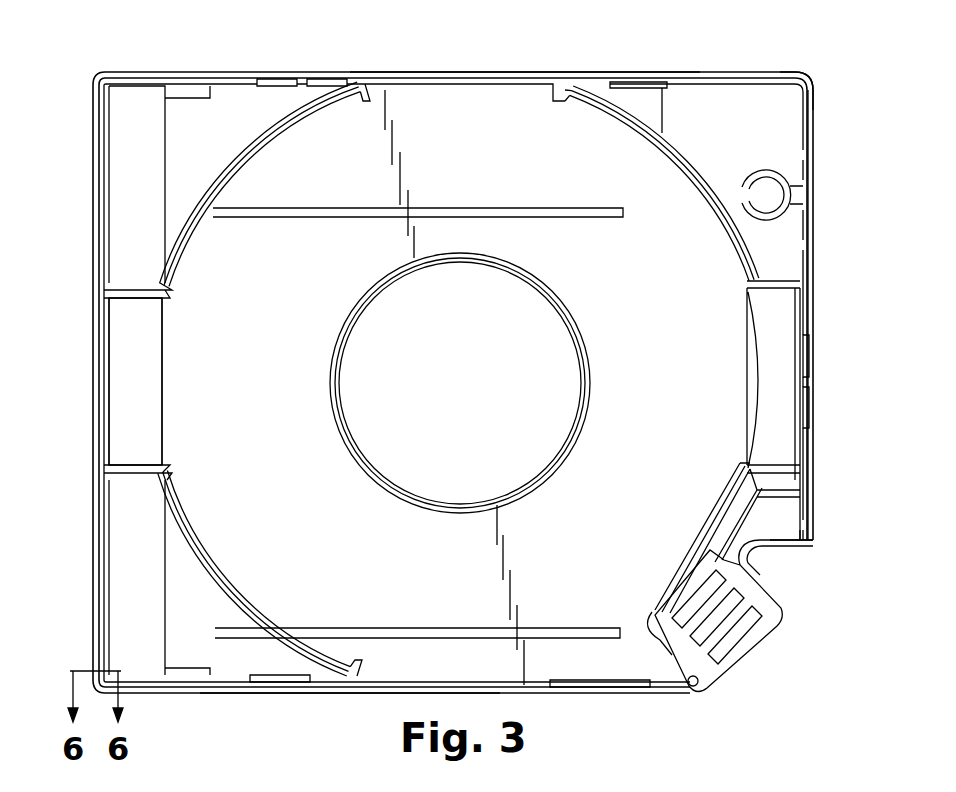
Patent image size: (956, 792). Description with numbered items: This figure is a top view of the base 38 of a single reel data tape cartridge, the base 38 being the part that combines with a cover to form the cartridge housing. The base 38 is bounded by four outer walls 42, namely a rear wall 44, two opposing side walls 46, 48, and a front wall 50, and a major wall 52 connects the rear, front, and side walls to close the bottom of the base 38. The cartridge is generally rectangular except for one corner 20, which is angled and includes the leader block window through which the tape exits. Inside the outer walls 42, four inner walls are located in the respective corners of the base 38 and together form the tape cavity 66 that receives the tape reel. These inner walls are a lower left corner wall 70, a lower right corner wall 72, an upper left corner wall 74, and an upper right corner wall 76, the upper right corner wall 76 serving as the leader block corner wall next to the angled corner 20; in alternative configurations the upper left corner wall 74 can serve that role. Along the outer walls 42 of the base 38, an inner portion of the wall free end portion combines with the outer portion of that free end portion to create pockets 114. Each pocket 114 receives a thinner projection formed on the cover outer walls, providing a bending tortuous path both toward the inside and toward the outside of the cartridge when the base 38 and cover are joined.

The angled corner 20 is at (738, 650).
The base 38 is at (486, 68).
The outer walls 42 is at (817, 108).
The rear wall 44 is at (93, 434).
The side wall 46 is at (290, 695).
The side wall 48 is at (648, 72).
The front wall 50 is at (814, 262).
The major wall 52 is at (477, 589).
The tape cavity 66 is at (205, 373).
The lower left corner wall 70 is at (300, 138).
The lower right corner wall 72 is at (206, 533).
The upper left corner wall 74 is at (694, 200).
The upper right corner wall 76 is at (722, 492).
The pocket 114 is at (330, 78).